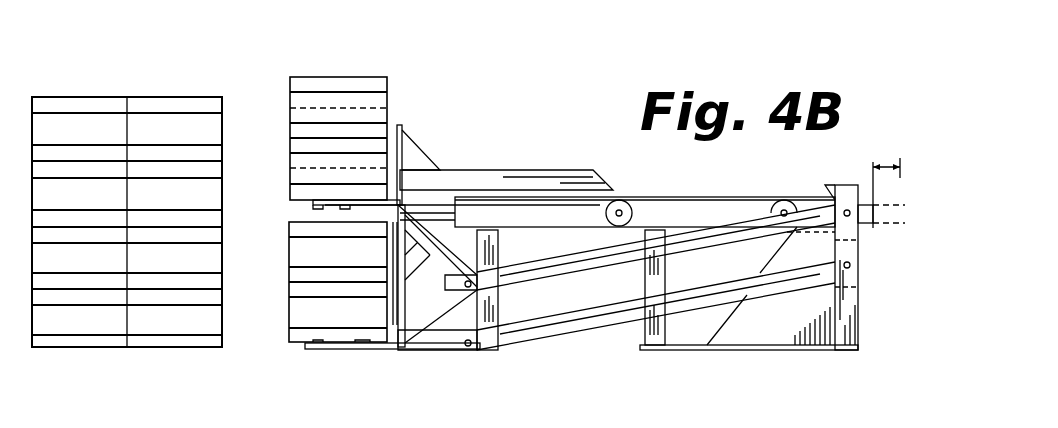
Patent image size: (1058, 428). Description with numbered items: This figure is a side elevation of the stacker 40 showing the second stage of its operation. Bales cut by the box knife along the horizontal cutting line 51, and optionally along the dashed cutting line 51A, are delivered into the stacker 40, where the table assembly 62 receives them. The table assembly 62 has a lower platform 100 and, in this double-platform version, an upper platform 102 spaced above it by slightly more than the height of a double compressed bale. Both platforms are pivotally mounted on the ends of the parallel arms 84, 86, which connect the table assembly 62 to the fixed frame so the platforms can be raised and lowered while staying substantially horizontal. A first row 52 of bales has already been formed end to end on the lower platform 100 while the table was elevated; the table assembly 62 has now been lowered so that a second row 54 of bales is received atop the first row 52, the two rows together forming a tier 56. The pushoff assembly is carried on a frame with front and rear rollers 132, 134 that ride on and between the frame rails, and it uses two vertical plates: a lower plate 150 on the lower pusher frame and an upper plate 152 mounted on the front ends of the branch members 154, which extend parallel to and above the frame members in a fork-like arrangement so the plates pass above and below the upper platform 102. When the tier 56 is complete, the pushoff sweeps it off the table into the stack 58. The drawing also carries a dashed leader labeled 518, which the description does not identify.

The stacker 40 is at (722, 176).
The horizontal cutting line 51 is at (358, 138).
The dashed cutting line 51A is at (348, 108).
The first row 52 is at (270, 330).
The second row 54 is at (280, 78).
The tier 56 is at (315, 48).
The stack 58 is at (160, 0).
The table assembly 62 is at (560, 356).
The parallel arm 84 is at (567, 266).
The parallel arm 86 is at (575, 320).
The lower platform 100 is at (342, 352).
The upper platform 102 is at (328, 206).
The front roller 132 is at (625, 200).
The rear roller 134 is at (780, 200).
The lower plate 150 is at (402, 290).
The upper plate 152 is at (400, 153).
The branch member 154 is at (562, 170).
The separation line 518 is at (295, 165).